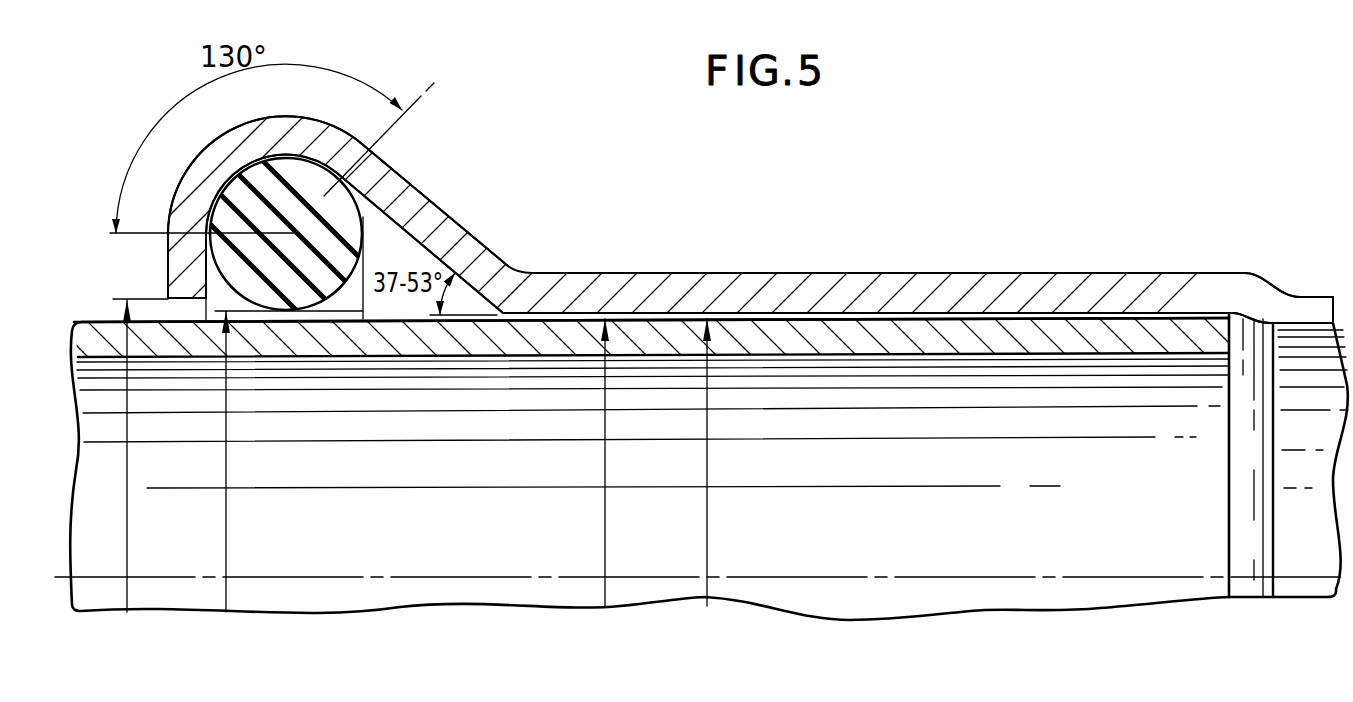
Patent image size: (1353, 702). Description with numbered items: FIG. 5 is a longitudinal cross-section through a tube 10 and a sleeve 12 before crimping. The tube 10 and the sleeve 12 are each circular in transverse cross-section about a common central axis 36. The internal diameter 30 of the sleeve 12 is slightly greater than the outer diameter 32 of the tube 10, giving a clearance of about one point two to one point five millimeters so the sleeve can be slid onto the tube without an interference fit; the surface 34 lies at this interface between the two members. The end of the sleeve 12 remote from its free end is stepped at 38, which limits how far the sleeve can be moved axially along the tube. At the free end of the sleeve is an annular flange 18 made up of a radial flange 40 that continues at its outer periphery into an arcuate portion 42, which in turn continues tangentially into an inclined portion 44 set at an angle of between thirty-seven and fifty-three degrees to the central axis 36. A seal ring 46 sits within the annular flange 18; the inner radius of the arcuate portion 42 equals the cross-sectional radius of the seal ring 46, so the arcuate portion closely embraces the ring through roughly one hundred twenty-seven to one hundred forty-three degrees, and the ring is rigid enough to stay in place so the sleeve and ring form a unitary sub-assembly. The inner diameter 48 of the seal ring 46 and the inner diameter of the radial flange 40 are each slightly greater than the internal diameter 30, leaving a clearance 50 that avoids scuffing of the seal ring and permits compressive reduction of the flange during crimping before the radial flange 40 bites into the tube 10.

The tube 10 is at (963, 343).
The sleeve 12 is at (718, 273).
The annular flange 18 is at (195, 166).
The internal diameter 30 is at (605, 533).
The outer diameter 32 is at (707, 533).
The interface surface 34 is at (932, 319).
The central axis 36 is at (498, 582).
The stepped end 38 is at (1320, 305).
The radial flange 40 is at (167, 247).
The arcuate portion 42 is at (250, 128).
The inclined portion 44 is at (445, 221).
The seal ring 46 is at (357, 188).
The inner diameter of the seal ring 48 is at (227, 531).
The leg clearance dimension 50 is at (127, 543).